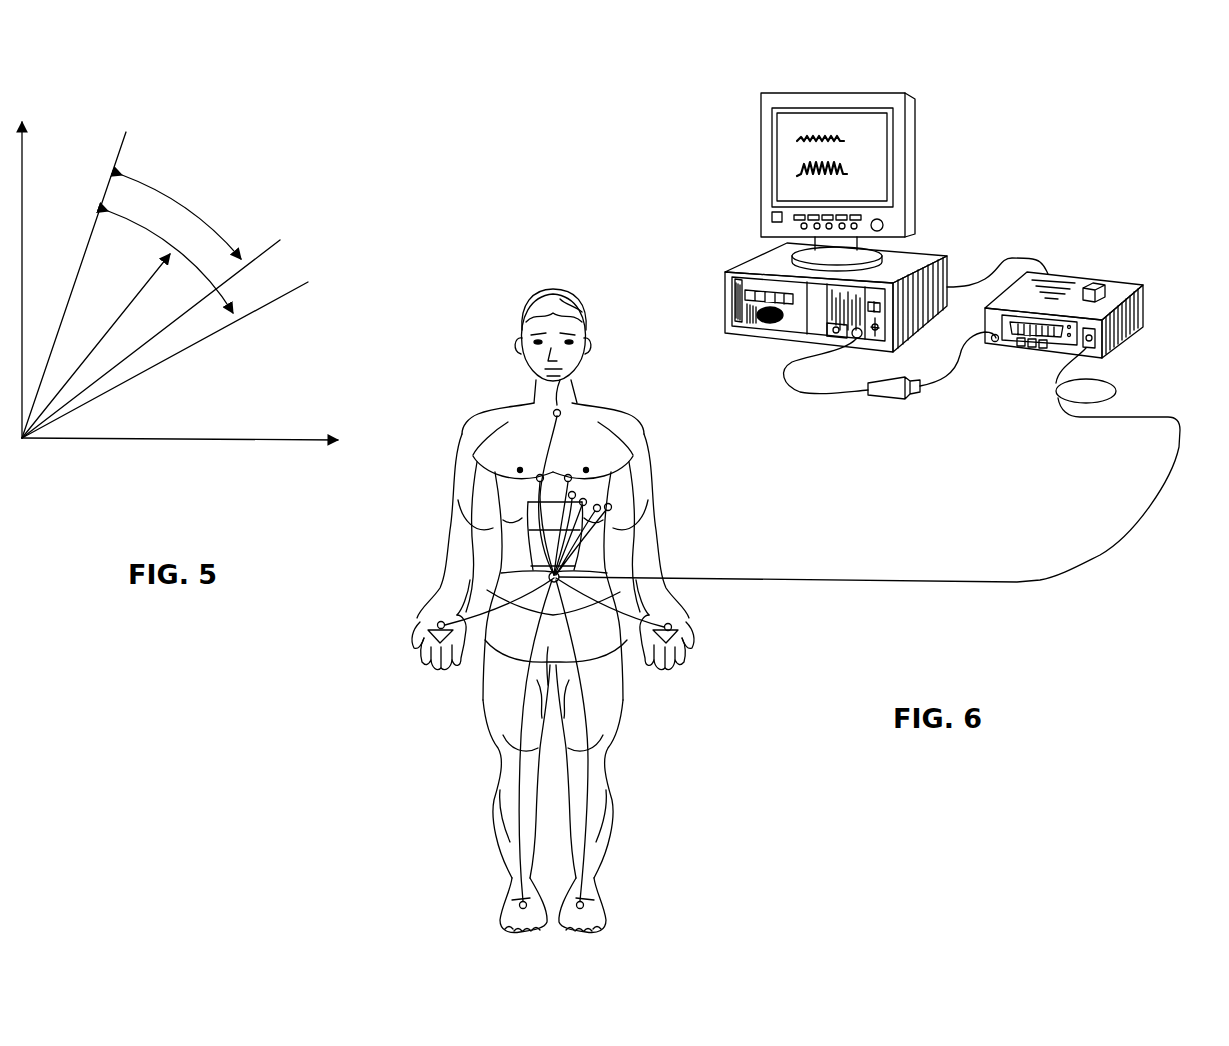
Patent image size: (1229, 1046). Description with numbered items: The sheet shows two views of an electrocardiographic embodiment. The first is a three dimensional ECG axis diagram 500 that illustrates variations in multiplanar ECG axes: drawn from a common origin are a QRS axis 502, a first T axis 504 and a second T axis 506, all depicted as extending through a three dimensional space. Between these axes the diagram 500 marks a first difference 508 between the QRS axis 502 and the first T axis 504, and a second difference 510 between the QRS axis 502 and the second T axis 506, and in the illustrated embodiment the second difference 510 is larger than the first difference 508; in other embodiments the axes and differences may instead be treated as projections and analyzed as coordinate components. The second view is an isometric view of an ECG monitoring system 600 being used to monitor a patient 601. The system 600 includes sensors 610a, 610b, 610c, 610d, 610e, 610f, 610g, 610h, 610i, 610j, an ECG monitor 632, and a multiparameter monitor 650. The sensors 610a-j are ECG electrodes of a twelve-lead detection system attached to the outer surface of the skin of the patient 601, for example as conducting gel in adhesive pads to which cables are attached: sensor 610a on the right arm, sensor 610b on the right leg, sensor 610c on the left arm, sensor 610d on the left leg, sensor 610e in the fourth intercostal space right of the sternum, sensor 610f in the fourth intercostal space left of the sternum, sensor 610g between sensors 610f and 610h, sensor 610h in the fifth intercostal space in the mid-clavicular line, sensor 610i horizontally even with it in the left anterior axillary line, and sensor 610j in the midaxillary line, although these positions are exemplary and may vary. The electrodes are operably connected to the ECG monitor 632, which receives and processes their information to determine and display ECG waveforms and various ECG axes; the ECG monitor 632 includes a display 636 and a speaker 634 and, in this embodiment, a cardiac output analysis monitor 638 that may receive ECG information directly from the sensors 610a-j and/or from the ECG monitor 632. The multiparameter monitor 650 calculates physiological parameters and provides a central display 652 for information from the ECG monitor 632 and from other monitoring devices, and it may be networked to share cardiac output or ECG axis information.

In FIG. 5, the three dimensional ECG axis diagram 500 is at (310, 146).
In FIG. 5, the QRS axis 502 is at (104, 192).
In FIG. 5, the first T axis 504 is at (267, 241).
In FIG. 5, the second T axis 506 is at (293, 292).
In FIG. 5, the first difference 508 is at (152, 183).
In FIG. 5, the second difference 510 is at (195, 255).
In FIG. 6, the ECG monitoring system 600 is at (616, 254).
In FIG. 6, the patient 601 is at (528, 305).
In FIG. 6, the sensor 610a is at (433, 648).
In FIG. 6, the sensor 610b is at (518, 903).
In FIG. 6, the sensor 610c is at (680, 648).
In FIG. 6, the sensor 610d is at (587, 903).
In FIG. 6, the sensor 610e is at (577, 389).
In FIG. 6, the sensor 610f is at (568, 415).
In FIG. 6, the sensor 610g is at (603, 440).
In FIG. 6, the sensor 610h is at (615, 466).
In FIG. 6, the sensor 610i is at (586, 501).
In FIG. 6, the sensor 610j is at (612, 508).
In FIG. 6, the ECG monitor 632 is at (1058, 273).
In FIG. 6, the speaker 634 is at (942, 388).
In FIG. 6, the display 636 is at (1034, 350).
In FIG. 6, the cardiac output analysis monitor 638 is at (1103, 282).
In FIG. 6, the multiparameter monitor 650 is at (917, 140).
In FIG. 6, the central display 652 is at (788, 158).